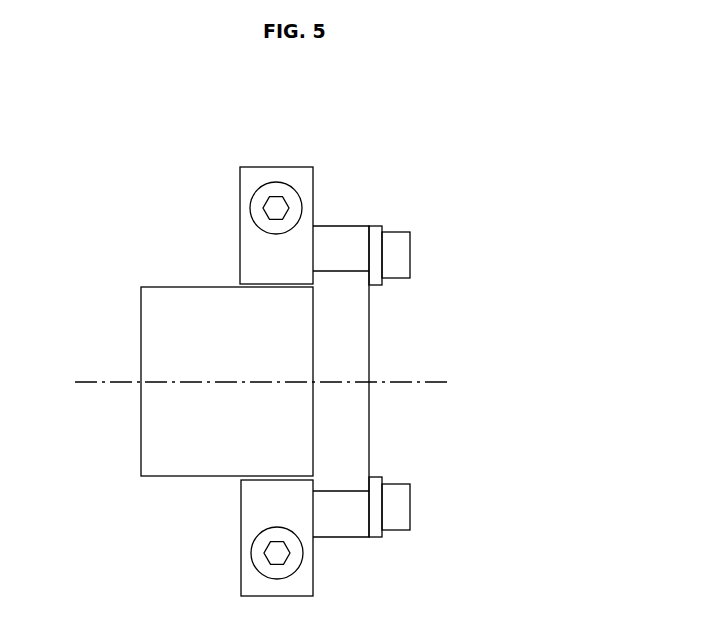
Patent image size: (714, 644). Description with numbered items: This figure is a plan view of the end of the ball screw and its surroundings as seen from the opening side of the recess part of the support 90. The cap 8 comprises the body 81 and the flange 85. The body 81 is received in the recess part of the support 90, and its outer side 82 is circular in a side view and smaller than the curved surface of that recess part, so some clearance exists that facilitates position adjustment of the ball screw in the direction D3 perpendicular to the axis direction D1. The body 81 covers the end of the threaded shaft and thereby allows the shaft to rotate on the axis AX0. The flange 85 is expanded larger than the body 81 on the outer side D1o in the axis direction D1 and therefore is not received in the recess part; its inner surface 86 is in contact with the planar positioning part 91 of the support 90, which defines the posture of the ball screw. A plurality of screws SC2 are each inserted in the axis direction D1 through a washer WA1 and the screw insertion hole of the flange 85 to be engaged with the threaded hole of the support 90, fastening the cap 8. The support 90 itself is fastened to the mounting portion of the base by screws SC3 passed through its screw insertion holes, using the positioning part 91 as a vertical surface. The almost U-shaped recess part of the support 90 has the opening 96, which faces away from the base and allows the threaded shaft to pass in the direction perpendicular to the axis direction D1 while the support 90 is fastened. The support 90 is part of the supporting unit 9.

The cap 8 is at (138, 283).
The body 81 is at (211, 337).
The outer side 82 is at (170, 286).
The flange 85 is at (340, 226).
The inner surface 86 is at (315, 487).
The clamp 9 is at (240, 345).
The support 90 is at (239, 166).
The positioning part 91 is at (315, 505).
The opening 96 is at (250, 465).
The screw SC2 is at (410, 237).
The screw SC3 is at (277, 182).
The washer WA1 is at (378, 224).
The axis AX0 is at (91, 381).
The axis direction D1 is at (122, 420).
The outer side D1o is at (383, 428).
The direction D3 is at (543, 328).